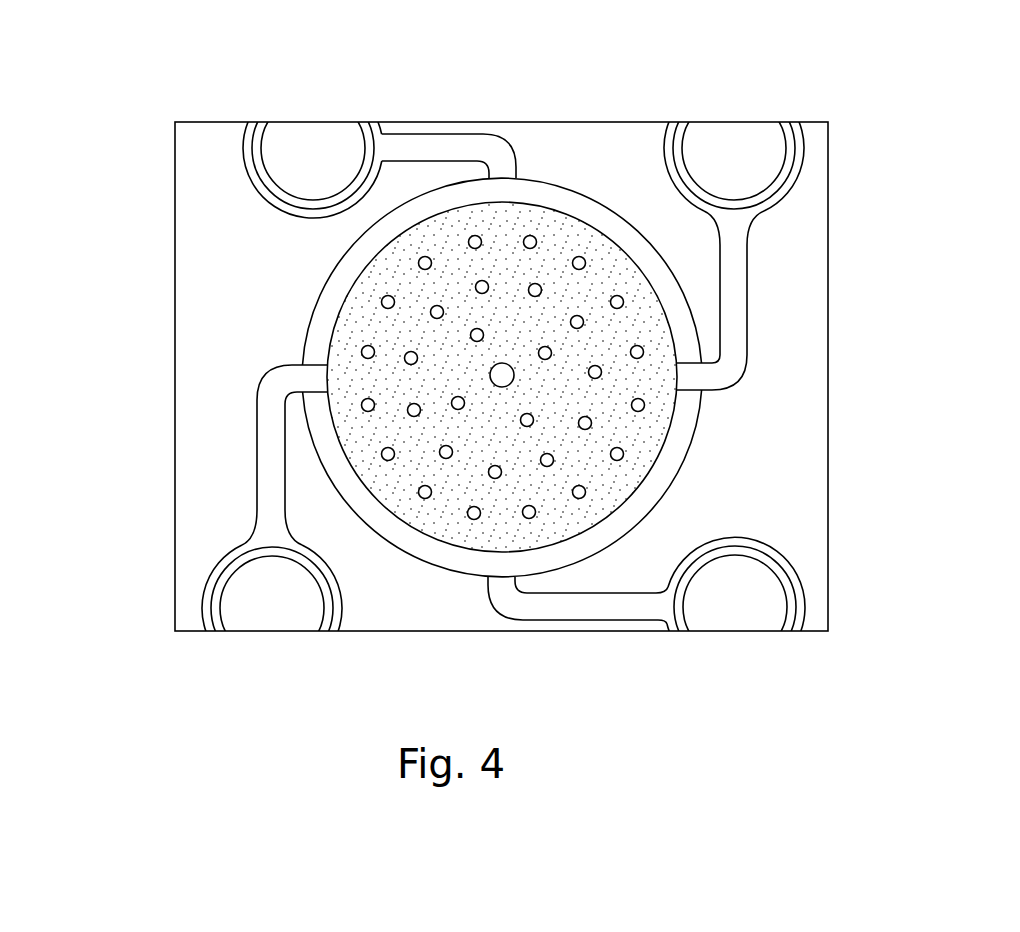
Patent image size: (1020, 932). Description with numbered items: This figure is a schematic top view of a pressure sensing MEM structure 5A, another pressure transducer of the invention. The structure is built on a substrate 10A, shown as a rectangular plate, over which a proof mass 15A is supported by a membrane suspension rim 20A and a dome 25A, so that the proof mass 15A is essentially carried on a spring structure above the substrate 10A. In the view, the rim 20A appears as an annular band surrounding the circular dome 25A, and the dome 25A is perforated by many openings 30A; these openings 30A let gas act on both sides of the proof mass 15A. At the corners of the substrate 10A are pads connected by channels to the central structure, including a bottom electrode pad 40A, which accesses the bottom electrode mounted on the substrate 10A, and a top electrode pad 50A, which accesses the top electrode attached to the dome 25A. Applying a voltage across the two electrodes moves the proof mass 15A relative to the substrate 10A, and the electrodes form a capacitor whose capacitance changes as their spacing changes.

The pressure sensing MEM structure 5A is at (120, 434).
The substrate 10A is at (168, 501).
The proof mass 15A is at (516, 356).
The membrane suspension post(s) or rim 20A is at (702, 448).
The dome 25A is at (610, 475).
The openings 30A is at (578, 513).
The bottom electrode pad 40A is at (754, 616).
The top electrode pad 50A is at (736, 141).